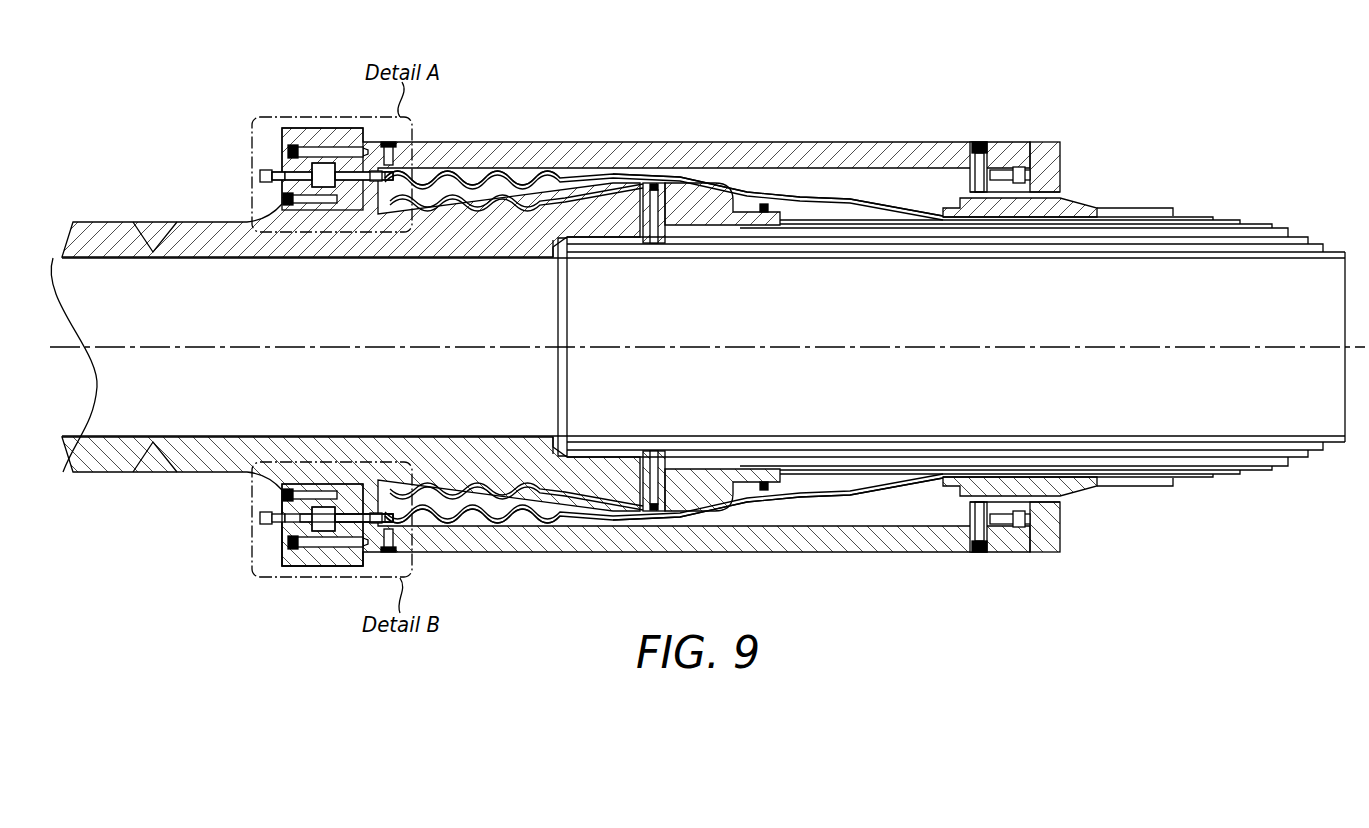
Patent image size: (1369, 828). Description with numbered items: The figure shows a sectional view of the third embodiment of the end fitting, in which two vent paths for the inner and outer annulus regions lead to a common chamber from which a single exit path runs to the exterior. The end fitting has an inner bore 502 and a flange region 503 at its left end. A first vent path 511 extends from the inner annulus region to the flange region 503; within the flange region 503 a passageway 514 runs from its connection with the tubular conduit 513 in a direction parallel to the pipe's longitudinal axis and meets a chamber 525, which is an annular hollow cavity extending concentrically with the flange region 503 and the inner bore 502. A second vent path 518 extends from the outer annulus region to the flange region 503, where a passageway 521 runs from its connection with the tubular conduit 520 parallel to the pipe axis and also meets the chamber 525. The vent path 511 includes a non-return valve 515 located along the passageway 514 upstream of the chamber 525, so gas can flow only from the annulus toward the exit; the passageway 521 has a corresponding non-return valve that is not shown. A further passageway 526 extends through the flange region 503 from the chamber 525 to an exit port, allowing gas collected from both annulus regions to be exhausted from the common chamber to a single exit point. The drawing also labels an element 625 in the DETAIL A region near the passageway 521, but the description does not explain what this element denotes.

The inner bore 502 is at (520, 331).
The flange region 503 is at (280, 562).
The first vent path 511 is at (750, 520).
The tubular conduit 513 is at (508, 520).
The passageway 514 is at (353, 520).
The non-return valve 515 is at (317, 518).
The second vent path 518 is at (781, 176).
The tubular conduit 520 is at (456, 178).
The passageway 521 is at (360, 180).
The chamber 525 is at (320, 530).
The further passageway 526 is at (298, 180).
The fitting block 625 is at (325, 175).